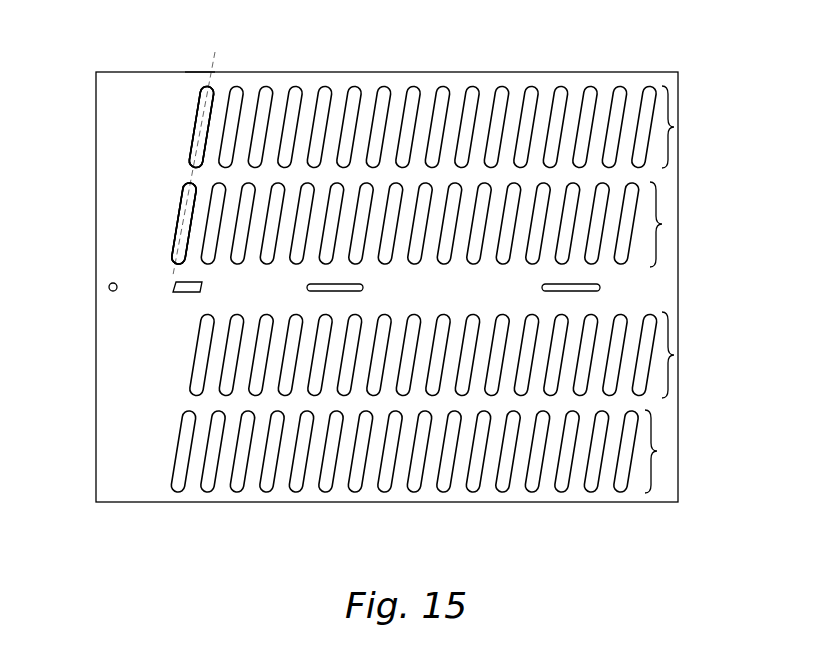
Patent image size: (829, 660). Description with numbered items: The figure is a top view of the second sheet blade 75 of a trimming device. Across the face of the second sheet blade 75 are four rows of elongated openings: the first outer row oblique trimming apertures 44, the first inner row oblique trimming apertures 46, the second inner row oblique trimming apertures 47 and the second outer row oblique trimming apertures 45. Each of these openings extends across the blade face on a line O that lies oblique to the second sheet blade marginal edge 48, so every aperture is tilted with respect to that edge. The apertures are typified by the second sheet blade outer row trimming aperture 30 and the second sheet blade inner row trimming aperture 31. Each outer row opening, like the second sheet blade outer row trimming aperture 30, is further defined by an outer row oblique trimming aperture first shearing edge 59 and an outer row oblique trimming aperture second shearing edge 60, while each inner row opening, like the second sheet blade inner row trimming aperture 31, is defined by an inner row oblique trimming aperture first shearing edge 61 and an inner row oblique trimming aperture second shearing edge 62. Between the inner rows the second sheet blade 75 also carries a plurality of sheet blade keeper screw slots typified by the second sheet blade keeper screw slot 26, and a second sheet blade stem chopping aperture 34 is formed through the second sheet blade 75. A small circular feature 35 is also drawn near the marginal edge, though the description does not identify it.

The second sheet blade 75 is at (100, 428).
The line O is at (212, 62).
The second sheet blade marginal edge 48 is at (198, 72).
The first outer row oblique trimming apertures 44 is at (439, 125).
The first inner row oblique trimming apertures 46 is at (429, 222).
The second inner row oblique trimming apertures 47 is at (674, 352).
The second outer row oblique trimming apertures 45 is at (657, 448).
The second sheet blade outer row trimming aperture 30 is at (205, 97).
The outer row oblique trimming aperture first shearing edge 59 is at (196, 127).
The outer row oblique trimming aperture second shearing edge 60 is at (190, 155).
The second sheet blade inner row trimming aperture 31 is at (187, 192).
The inner row oblique trimming aperture first shearing edge 61 is at (183, 221).
The inner row oblique trimming aperture second shearing edge 62 is at (180, 248).
The hole 35 is at (109, 287).
The second sheet blade stem chopping aperture 34 is at (177, 293).
The second sheet blade keeper screw slot 26 is at (552, 287).